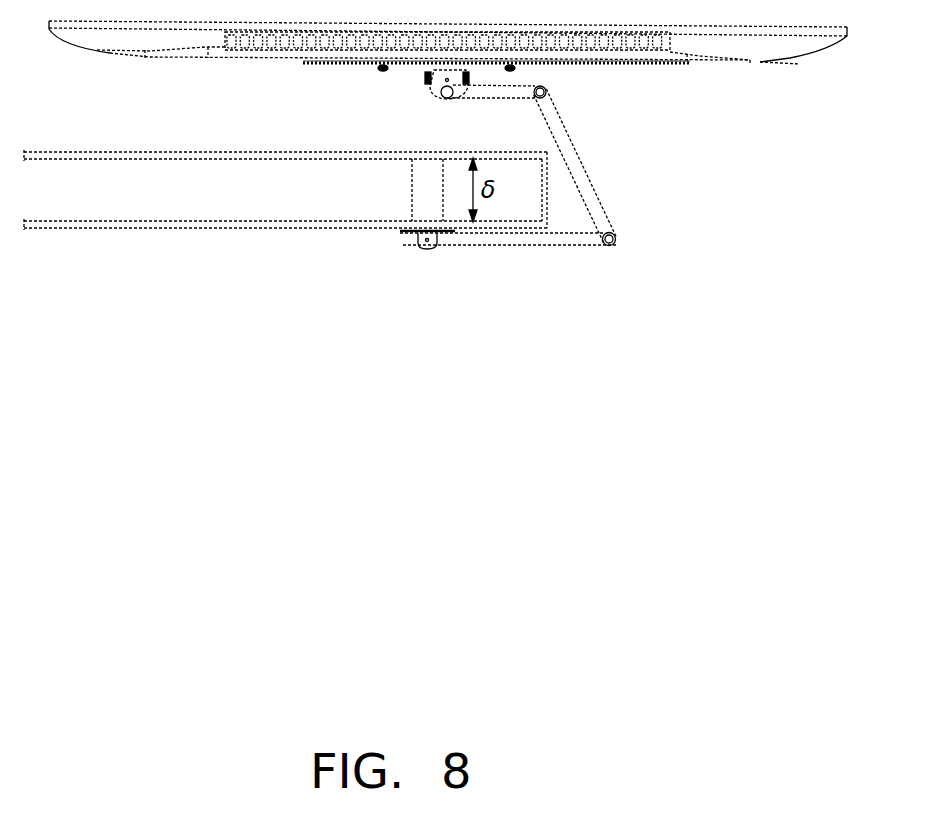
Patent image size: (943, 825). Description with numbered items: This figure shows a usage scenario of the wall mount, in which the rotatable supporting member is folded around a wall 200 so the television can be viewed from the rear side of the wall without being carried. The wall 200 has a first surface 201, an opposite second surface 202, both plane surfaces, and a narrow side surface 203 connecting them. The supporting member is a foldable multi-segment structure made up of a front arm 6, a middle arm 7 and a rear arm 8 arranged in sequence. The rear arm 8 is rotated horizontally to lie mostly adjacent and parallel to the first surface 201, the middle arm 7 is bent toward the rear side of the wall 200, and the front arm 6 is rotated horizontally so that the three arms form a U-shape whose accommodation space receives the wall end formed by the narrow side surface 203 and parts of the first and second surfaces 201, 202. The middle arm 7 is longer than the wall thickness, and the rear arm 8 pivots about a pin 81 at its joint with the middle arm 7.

The wall 200 is at (285, 191).
The first surface 201 is at (105, 230).
The second surface 202 is at (103, 151).
The narrow side surface 203 is at (545, 203).
The front arm 6 is at (500, 93).
The middle arm 7 is at (580, 173).
The rear arm 8 is at (509, 270).
The pivot pin 81 is at (605, 246).